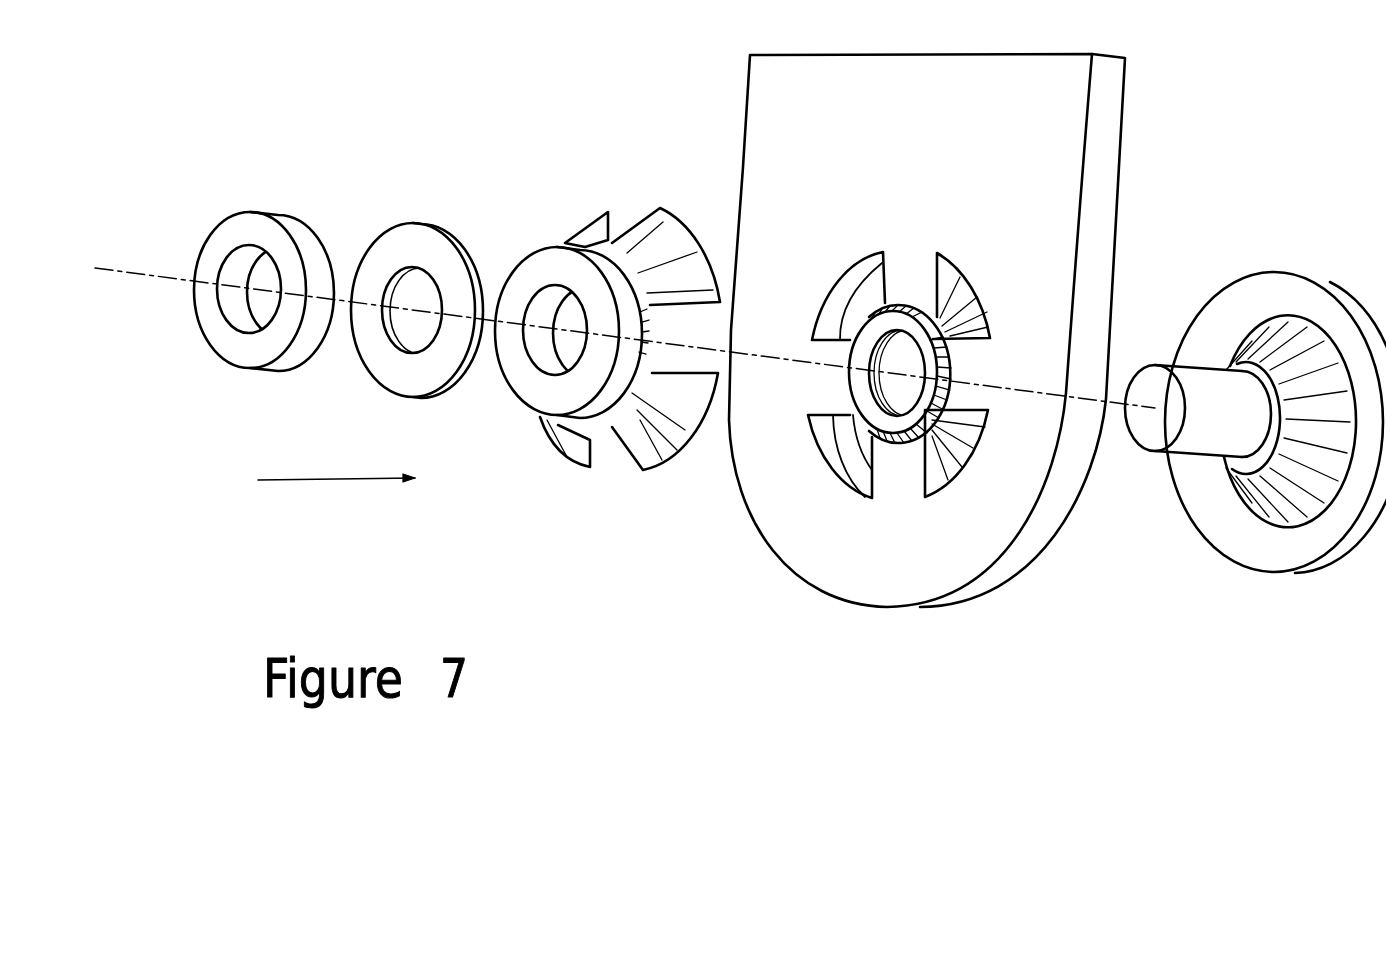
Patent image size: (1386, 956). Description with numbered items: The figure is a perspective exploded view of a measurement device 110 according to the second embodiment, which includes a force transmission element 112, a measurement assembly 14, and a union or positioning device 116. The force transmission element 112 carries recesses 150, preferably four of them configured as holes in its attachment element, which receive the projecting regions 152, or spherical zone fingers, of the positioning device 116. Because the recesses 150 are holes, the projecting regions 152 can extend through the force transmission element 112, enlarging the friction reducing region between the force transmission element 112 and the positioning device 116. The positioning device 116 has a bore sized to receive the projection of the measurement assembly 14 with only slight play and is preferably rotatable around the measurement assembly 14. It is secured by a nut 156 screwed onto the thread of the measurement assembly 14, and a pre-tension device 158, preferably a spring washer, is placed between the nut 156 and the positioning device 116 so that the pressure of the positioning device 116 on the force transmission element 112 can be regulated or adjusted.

The nut 156 is at (233, 237).
The pre-tension device 158 is at (397, 253).
The positioning device 116 is at (518, 250).
The projecting regions 152 is at (653, 233).
The recesses 150 is at (850, 330).
The force transmission element 112 is at (758, 557).
The measurement assembly 14 is at (1192, 557).
The measurement device 110 is at (336, 466).